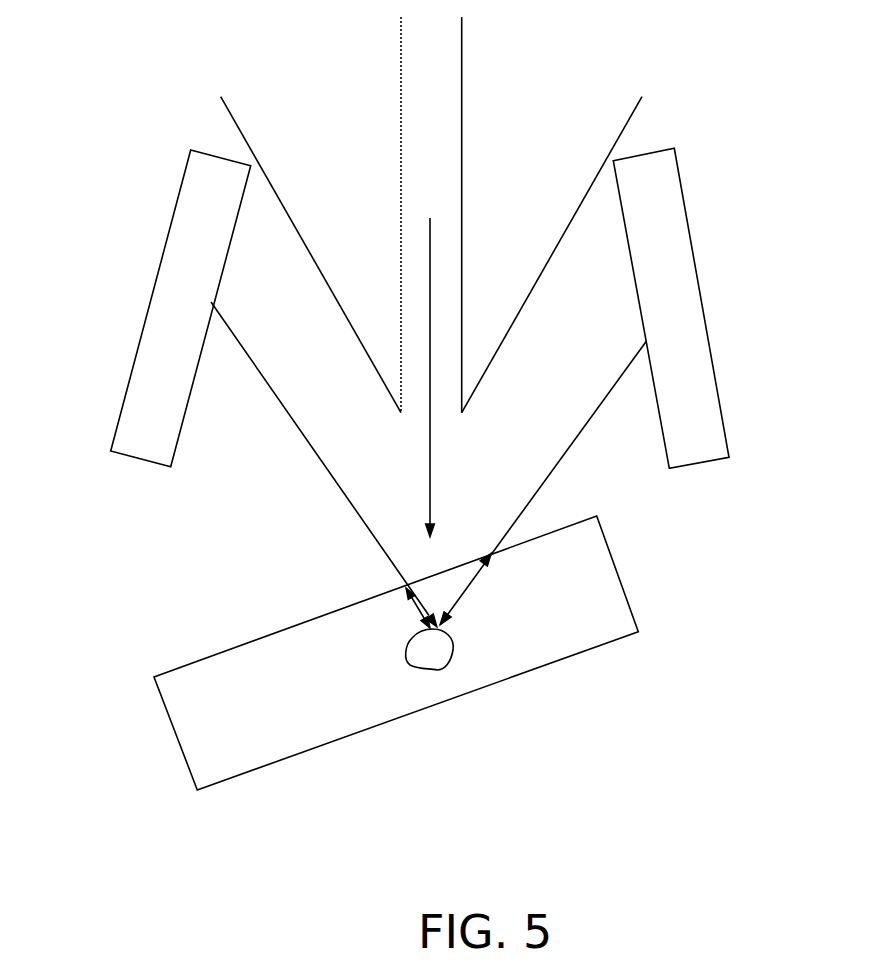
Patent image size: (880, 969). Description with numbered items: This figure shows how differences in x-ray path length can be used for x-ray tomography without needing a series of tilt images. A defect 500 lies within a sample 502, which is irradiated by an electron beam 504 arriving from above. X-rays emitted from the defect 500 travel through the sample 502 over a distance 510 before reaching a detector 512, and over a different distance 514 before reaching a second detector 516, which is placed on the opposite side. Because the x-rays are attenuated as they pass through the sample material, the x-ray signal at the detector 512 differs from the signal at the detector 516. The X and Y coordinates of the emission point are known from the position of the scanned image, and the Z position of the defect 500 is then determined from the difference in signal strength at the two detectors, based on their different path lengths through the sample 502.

The defect 500 is at (432, 670).
The sample 502 is at (602, 622).
The laser beam 504 is at (430, 263).
The distance 510 is at (475, 578).
The detector 512 is at (692, 240).
The distance 514 is at (408, 597).
The detector 516 is at (160, 268).